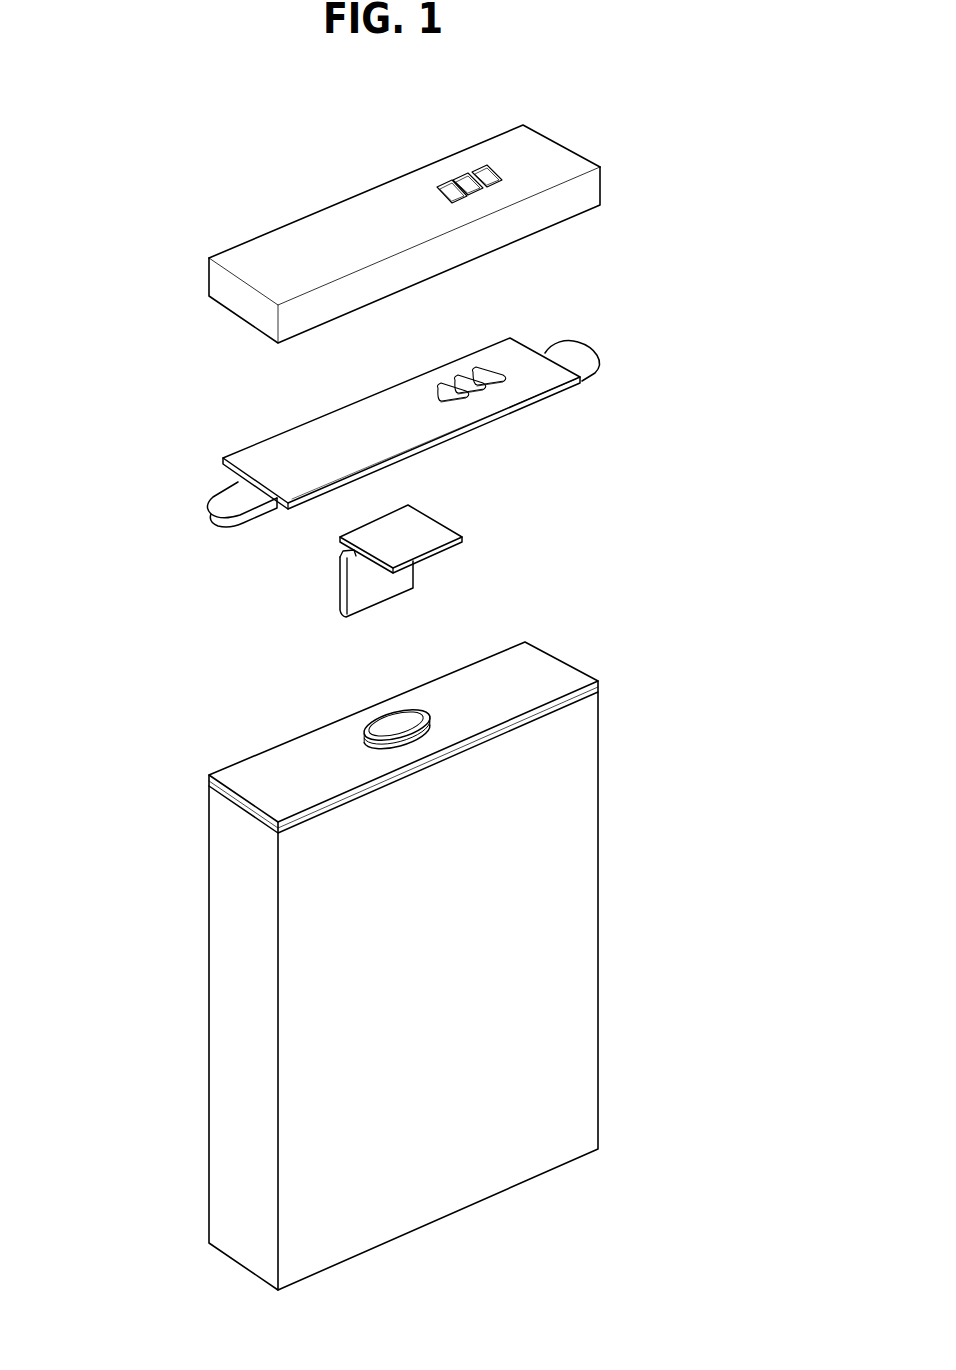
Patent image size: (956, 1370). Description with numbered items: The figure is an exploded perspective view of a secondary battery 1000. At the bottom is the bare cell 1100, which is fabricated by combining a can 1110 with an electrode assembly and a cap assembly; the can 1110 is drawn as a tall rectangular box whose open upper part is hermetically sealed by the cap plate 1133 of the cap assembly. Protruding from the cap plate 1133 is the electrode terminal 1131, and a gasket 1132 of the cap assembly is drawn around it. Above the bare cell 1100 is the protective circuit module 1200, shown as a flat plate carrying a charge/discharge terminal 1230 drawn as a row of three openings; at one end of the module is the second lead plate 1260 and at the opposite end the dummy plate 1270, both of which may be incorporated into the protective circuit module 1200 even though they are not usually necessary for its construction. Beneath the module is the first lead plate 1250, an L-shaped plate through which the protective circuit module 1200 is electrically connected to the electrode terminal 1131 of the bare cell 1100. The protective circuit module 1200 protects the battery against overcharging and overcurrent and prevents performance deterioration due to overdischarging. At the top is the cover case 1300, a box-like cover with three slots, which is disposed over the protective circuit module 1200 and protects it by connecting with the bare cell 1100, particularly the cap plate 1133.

The secondary battery 1000 is at (124, 132).
The bare cell 1100 is at (336, 961).
The can 1110 is at (236, 917).
The electrode terminal 1131 is at (387, 728).
The gasket 1132 is at (407, 710).
The cap plate 1133 is at (305, 753).
The protective circuit module 1200 is at (391, 412).
The charge/discharge terminal 1230 is at (483, 368).
The first lead plate 1250 is at (435, 515).
The second lead plate 1260 is at (580, 362).
The dummy plate 1270 is at (212, 505).
The cover case 1300 is at (340, 185).